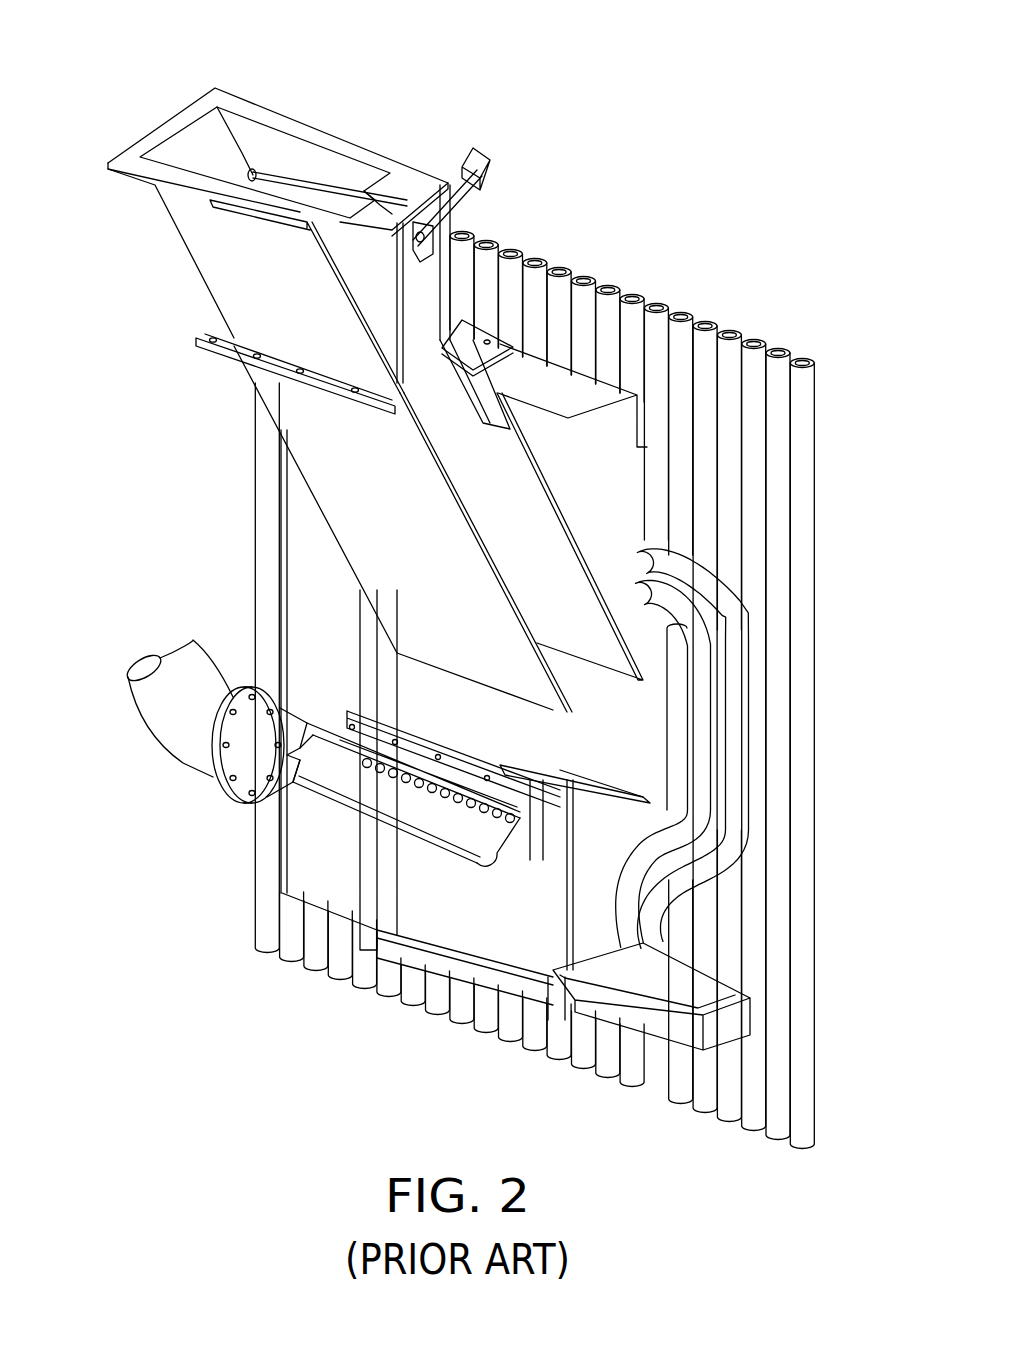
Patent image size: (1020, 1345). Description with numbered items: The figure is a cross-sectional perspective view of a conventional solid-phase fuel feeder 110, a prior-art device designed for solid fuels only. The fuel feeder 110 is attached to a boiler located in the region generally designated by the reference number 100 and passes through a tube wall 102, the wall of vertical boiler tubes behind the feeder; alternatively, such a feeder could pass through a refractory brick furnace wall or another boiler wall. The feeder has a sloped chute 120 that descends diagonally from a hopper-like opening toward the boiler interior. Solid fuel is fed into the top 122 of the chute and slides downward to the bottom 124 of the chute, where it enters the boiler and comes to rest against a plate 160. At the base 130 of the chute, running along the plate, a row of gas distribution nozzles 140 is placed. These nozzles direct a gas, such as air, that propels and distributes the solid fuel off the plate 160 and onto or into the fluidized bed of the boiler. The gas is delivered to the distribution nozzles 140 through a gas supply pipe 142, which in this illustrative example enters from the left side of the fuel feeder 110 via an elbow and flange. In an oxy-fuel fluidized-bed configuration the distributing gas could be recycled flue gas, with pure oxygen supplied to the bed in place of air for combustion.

The boiler region 100 is at (712, 190).
The tube wall 102 is at (806, 512).
The solid-phase fuel feeder 110 is at (146, 112).
The sloped chute 120 is at (315, 440).
The top of the chute 122 is at (210, 202).
The bottom of the chute 124 is at (450, 640).
The base of the chute 130 is at (628, 790).
The gas distribution nozzles 140 is at (560, 862).
The gas supply pipe 142 is at (275, 757).
The plate 160 is at (660, 812).